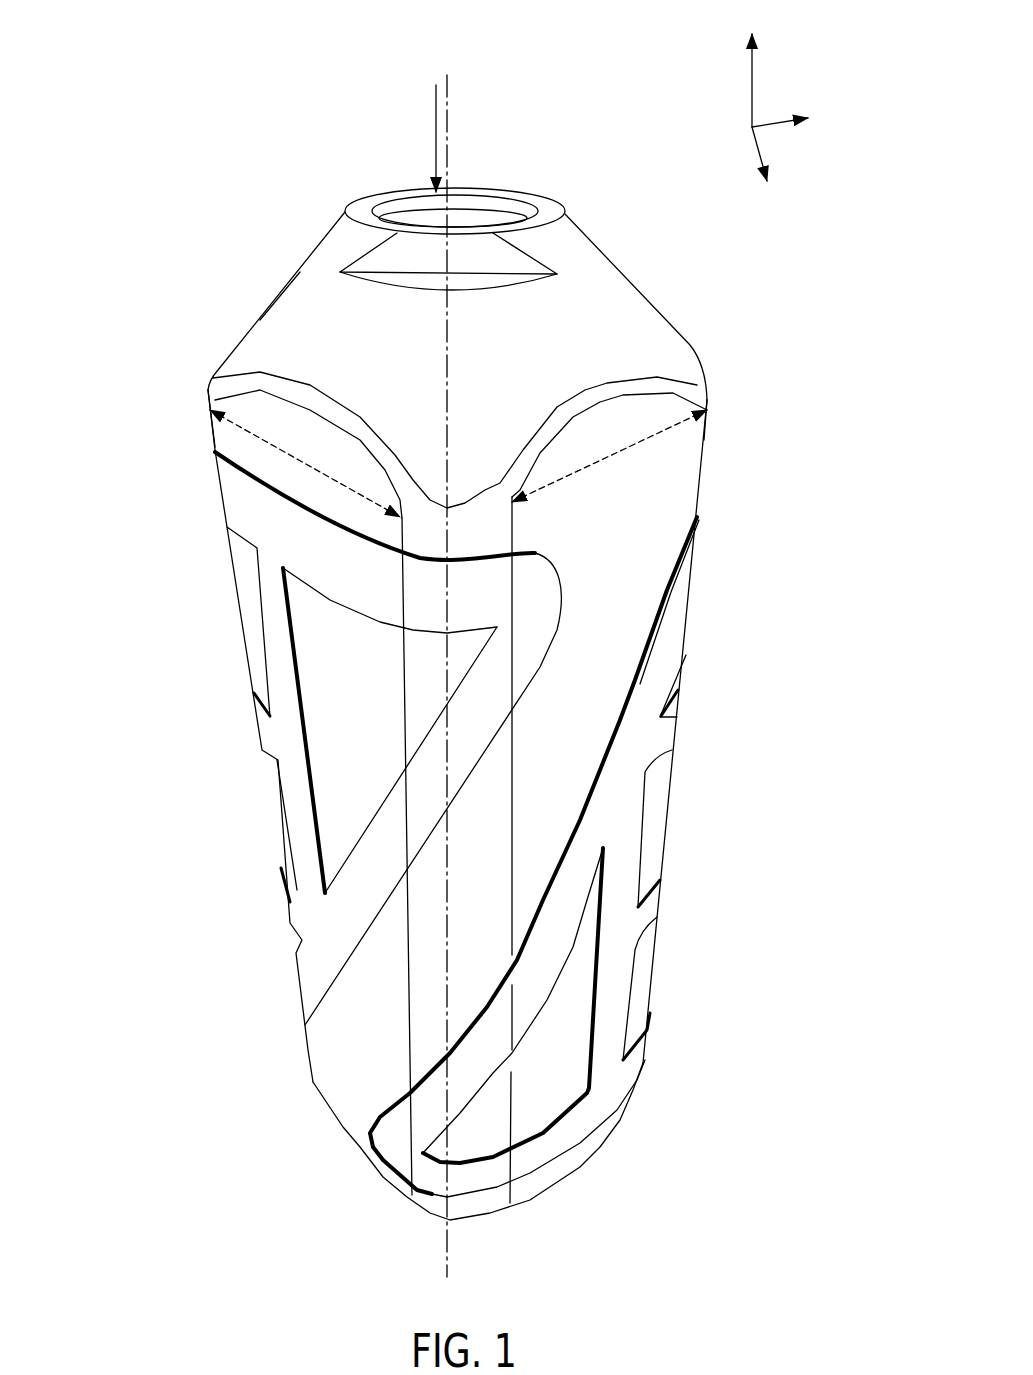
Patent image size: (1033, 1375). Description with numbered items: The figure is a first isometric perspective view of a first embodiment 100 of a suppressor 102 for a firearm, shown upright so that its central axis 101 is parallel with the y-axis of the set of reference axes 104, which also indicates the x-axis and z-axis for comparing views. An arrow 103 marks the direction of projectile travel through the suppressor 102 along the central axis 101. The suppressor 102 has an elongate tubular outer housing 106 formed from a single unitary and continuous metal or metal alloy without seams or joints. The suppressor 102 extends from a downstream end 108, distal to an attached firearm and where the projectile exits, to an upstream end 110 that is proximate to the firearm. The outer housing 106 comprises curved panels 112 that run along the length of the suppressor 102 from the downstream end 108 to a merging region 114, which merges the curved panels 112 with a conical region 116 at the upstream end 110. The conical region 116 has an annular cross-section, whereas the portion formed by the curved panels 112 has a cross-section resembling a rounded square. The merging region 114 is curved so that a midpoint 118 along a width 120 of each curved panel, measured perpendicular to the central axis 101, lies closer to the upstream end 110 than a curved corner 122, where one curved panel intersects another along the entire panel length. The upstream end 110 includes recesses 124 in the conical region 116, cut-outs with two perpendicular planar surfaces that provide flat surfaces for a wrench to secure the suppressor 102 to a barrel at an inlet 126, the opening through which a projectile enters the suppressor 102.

The first embodiment 100 is at (143, 92).
The central axis 101 is at (452, 125).
The suppressor 102 is at (318, 108).
The arrow 103 is at (435, 130).
The set of reference axes 104 is at (783, 78).
The outer housing 106 is at (148, 473).
The downstream end 108 is at (322, 1182).
The upstream end 110 is at (220, 220).
The curved panels 112 is at (338, 818).
The merging region 114 is at (207, 375).
The conical region 116 is at (272, 313).
The midpoint 118 is at (293, 383).
The width 120 is at (308, 472).
The curved corner 122 is at (462, 493).
The recesses 124 is at (398, 260).
The inlet 126 is at (508, 197).